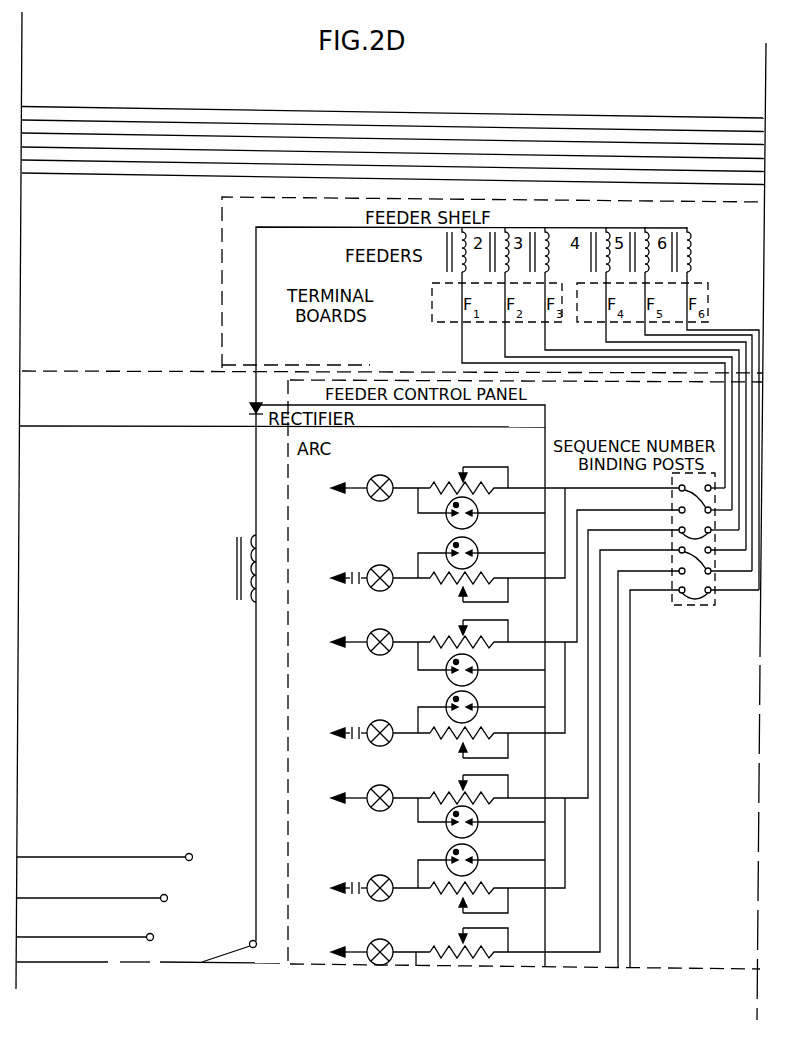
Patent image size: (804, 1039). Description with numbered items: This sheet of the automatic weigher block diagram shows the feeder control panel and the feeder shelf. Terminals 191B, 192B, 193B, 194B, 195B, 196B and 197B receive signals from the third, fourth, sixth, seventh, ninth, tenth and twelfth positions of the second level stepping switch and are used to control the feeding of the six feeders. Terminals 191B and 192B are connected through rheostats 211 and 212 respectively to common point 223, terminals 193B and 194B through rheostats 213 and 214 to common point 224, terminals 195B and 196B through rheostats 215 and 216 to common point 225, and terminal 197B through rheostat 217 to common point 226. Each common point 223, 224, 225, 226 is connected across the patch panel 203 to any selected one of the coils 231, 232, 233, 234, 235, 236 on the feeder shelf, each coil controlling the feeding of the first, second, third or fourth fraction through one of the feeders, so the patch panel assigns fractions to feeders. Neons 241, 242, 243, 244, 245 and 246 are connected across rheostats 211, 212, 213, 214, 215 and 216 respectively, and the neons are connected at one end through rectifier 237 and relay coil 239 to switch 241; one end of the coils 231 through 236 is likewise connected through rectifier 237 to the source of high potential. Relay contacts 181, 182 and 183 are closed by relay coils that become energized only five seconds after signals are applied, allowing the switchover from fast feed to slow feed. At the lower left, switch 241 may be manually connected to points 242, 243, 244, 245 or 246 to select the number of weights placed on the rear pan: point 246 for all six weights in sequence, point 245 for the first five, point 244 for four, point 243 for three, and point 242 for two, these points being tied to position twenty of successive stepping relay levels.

The relay contact 181 is at (350, 572).
The relay contact 182 is at (348, 724).
The relay contact 183 is at (348, 877).
The terminal 191B is at (360, 480).
The terminal 192B is at (360, 569).
The terminal 193B is at (360, 633).
The terminal 194B is at (360, 724).
The terminal 195B is at (360, 789).
The terminal 196B is at (360, 880).
The terminal 197B is at (360, 945).
The patch panel 203 is at (670, 602).
The rheostat 211 is at (453, 477).
The rheostat 212 is at (486, 578).
The rheostat 213 is at (449, 636).
The rheostat 214 is at (482, 722).
The rheostat 215 is at (438, 793).
The rheostat 216 is at (482, 884).
The rheostat 217 is at (444, 944).
The common point 223 is at (565, 488).
The common point 224 is at (568, 636).
The common point 225 is at (568, 791).
The common point 226 is at (568, 941).
The coil 231 is at (445, 265).
The coil 232 is at (494, 240).
The coil 233 is at (536, 240).
The coil 234 is at (612, 228).
The coil 235 is at (637, 240).
The coil 236 is at (688, 260).
The rectifier 237 is at (251, 407).
The relay coil 239 is at (254, 537).
The neon 241 is at (470, 507).
The neon 242 is at (472, 548).
The neon 243 is at (477, 676).
The neon 244 is at (446, 704).
The neon 245 is at (479, 810).
The neon 246 is at (450, 852).